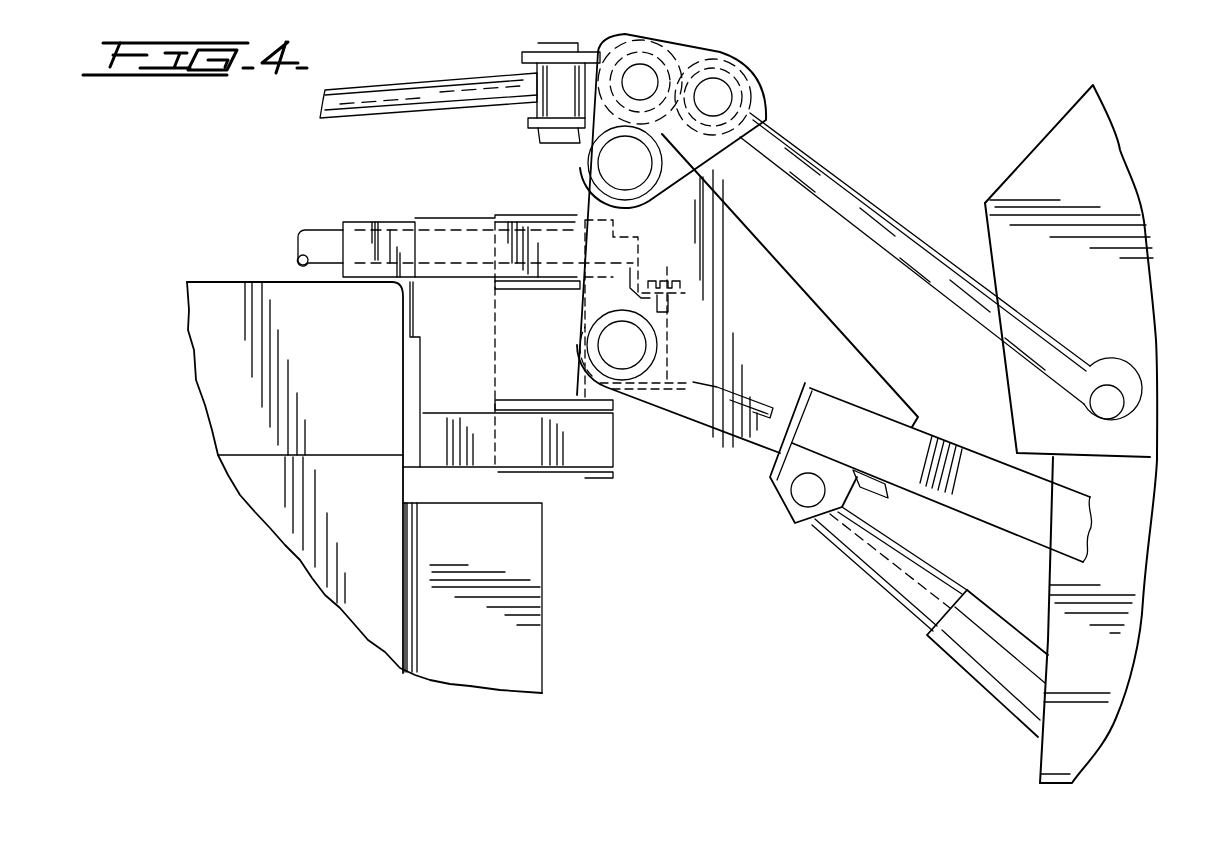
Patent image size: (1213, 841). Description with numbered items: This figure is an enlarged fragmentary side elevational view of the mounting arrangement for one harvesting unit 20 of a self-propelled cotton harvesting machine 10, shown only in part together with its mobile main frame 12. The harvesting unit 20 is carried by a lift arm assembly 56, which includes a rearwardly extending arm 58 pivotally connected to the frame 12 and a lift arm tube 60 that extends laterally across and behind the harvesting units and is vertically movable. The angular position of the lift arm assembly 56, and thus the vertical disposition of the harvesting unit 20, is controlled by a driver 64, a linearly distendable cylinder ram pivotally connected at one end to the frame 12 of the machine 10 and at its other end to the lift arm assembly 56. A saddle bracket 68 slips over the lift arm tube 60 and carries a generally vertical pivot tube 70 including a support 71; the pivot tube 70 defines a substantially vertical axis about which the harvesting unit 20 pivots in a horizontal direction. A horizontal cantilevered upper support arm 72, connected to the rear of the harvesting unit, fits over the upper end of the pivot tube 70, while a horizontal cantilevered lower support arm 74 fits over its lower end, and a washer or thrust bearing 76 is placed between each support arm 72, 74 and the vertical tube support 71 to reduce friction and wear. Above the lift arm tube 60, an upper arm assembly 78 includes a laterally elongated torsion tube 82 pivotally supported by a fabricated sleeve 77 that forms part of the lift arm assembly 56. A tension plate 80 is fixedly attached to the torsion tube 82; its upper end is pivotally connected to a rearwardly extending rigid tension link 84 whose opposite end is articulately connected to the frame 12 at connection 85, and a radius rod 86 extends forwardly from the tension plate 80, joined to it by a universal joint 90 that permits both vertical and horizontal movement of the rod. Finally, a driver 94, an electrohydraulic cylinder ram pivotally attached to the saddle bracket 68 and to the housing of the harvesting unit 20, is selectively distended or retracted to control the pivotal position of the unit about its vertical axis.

The cotton harvesting machine 10 is at (1097, 434).
The mobile main frame 12 is at (1128, 316).
The cotton picker harvesting unit 20 is at (207, 283).
The lift arm assembly 56 is at (823, 308).
The rearwardly extending arm 58 is at (1010, 501).
The lift arm tube 60 is at (639, 376).
The driver 64 is at (956, 664).
The saddle bracket 68 is at (698, 391).
The pivot tube 70 is at (550, 317).
The support 71 is at (508, 347).
The upper support arm 72 is at (456, 228).
The lower support arm 74 is at (453, 440).
The thrust bearing 76 is at (502, 289).
The fabricated sleeve 77 is at (747, 252).
The upper arm assembly 78 is at (647, 107).
The tension plate 80 is at (697, 57).
The torsion tube 82 is at (590, 164).
The tension link 84 is at (965, 266).
The articulated connection 85 is at (1107, 398).
The radius rod 86 is at (388, 98).
The universal joint 90 is at (556, 50).
The driver 94 is at (316, 240).